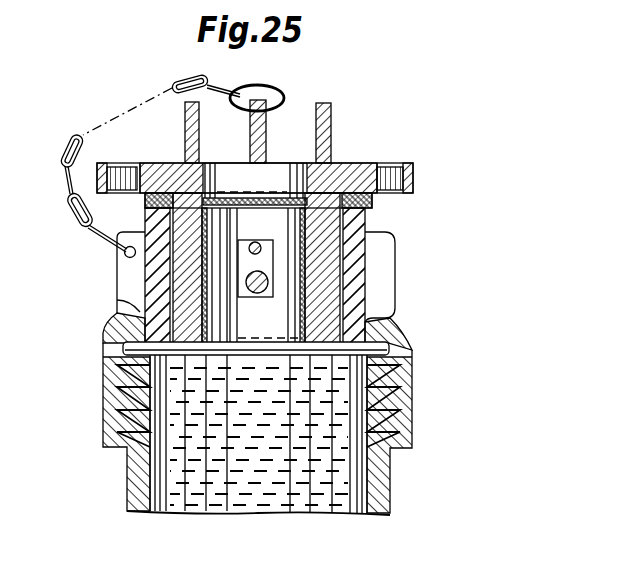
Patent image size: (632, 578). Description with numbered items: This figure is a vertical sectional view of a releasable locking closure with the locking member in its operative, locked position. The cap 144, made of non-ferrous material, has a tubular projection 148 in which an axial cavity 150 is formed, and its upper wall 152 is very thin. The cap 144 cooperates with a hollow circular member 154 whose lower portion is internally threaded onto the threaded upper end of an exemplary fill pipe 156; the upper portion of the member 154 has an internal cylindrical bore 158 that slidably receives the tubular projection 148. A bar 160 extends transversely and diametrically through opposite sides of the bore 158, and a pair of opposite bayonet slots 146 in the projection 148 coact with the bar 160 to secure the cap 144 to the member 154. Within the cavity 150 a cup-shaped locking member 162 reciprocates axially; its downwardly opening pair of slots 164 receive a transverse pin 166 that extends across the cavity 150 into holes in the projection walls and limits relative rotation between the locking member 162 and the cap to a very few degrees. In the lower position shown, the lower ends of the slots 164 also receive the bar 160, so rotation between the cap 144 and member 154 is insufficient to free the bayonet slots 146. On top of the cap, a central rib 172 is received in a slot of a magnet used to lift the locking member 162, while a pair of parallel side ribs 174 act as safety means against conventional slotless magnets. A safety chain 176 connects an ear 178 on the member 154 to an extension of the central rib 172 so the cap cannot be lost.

The cap 144 is at (363, 162).
The bayonet slots 146 is at (282, 269).
The tubular projection 148 is at (177, 290).
The cavity 150 is at (330, 124).
The upper wall 152 is at (300, 160).
The hollow circular member 154 is at (410, 339).
The fill pipe 156 is at (128, 493).
The internal cylindrical bore 158 is at (118, 270).
The bar 160 is at (257, 300).
The locking member 162 is at (237, 193).
The slots 164 is at (250, 297).
The transverse pin 166 is at (253, 240).
The central rib 172 is at (252, 104).
The side ribs 174 is at (184, 125).
The safety chain 176 is at (68, 135).
The ear 178 is at (113, 248).